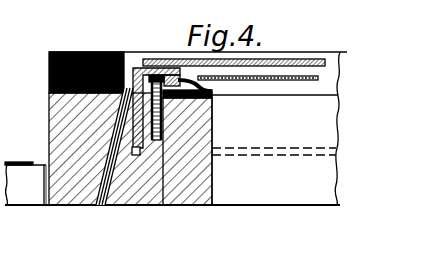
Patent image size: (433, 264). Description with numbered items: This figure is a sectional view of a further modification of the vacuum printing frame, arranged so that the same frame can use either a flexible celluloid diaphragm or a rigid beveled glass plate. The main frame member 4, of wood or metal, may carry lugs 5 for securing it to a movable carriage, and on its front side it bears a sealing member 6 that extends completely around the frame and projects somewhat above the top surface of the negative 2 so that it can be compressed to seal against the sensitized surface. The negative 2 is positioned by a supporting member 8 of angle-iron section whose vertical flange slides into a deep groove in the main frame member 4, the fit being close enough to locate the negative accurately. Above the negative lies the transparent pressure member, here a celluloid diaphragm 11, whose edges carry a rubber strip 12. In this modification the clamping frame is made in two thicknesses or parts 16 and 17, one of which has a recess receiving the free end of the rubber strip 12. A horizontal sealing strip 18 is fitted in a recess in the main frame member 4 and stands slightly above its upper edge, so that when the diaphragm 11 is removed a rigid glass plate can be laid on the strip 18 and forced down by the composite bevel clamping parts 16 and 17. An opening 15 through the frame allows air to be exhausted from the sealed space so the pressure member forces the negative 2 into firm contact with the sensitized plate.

The negative 2 is at (306, 56).
The main frame member 4 is at (62, 136).
The lugs 5 is at (32, 206).
The sealing member 6 is at (86, 53).
The negative supporting member 8 is at (132, 70).
The celluloid diaphragm 11 is at (318, 77).
The rubber strip 12 is at (208, 88).
The opening 15 is at (98, 207).
The clamping frame part 16 is at (178, 77).
The clamping frame part 17 is at (121, 181).
The horizontal sealing strip 18 is at (212, 99).